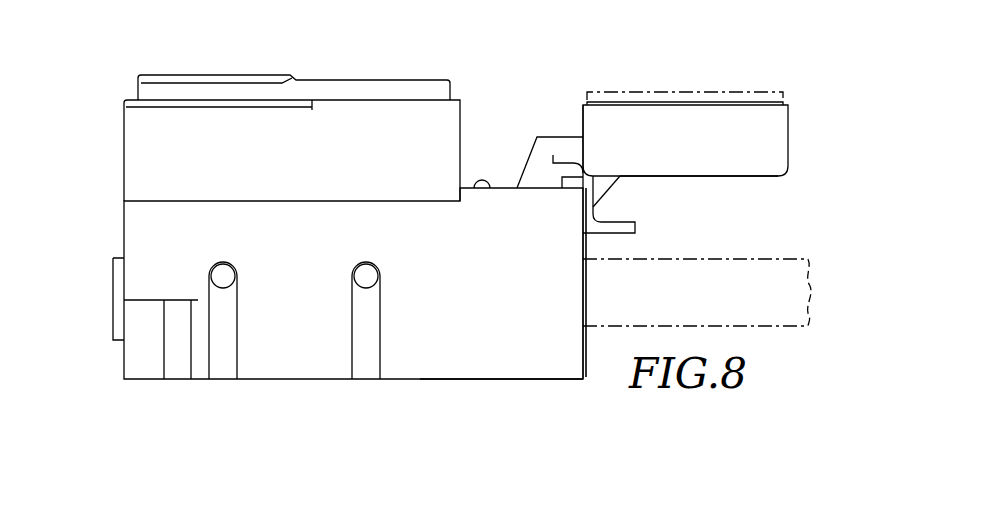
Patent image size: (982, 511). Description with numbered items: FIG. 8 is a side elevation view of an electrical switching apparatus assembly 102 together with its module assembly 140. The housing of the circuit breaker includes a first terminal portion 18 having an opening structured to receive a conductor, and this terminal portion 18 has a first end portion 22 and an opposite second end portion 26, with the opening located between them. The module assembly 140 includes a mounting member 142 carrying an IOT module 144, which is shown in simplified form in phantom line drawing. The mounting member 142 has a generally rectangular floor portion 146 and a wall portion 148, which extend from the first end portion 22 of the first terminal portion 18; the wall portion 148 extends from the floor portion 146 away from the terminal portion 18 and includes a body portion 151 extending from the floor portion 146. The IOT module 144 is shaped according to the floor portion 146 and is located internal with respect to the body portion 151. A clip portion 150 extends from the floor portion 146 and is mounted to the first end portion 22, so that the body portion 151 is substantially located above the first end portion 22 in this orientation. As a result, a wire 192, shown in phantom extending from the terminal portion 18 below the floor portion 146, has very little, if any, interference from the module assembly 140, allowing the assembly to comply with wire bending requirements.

The electrical switching apparatus assembly 102 is at (90, 145).
The first terminal portion 18 is at (563, 278).
The first end portion 22 is at (489, 190).
The second end portion 26 is at (540, 380).
The module assembly 140 is at (563, 100).
The mounting member 142 is at (577, 90).
The IOT module 144 is at (698, 92).
The floor portion 146 is at (693, 176).
The wall portion 148 is at (778, 158).
The clip portion 150 is at (635, 196).
The body portion 151 is at (781, 118).
The wire 192 is at (780, 245).